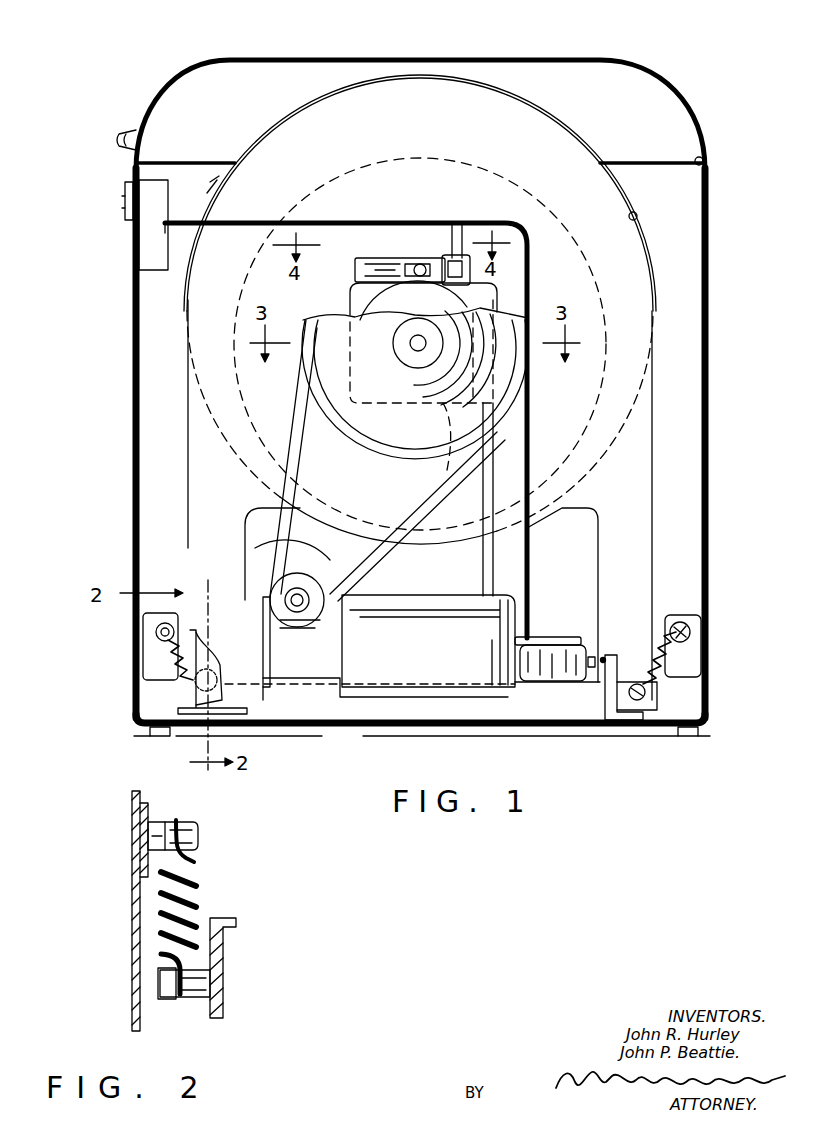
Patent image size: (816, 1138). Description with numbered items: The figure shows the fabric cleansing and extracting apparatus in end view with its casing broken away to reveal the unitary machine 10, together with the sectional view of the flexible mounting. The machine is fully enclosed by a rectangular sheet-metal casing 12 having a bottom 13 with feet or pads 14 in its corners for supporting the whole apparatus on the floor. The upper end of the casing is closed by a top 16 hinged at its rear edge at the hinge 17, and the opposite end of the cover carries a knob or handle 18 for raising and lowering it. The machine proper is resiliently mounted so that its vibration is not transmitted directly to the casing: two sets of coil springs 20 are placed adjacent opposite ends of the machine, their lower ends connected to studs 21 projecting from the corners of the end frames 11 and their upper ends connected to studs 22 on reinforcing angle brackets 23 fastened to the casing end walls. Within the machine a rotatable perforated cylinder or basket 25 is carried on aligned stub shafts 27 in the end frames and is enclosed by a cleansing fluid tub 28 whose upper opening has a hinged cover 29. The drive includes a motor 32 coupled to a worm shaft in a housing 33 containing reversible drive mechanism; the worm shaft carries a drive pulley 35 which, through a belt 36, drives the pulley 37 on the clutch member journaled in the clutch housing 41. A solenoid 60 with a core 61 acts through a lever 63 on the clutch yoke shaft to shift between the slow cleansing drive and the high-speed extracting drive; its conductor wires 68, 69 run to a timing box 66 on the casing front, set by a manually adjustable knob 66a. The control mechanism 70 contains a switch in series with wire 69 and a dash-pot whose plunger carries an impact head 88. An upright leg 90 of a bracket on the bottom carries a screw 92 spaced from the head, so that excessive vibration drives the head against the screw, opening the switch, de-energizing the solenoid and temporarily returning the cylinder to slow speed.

In FIG. 1, the unitary machine 10 is at (630, 380).
In FIG. 1, the end frames 11 is at (654, 558).
In FIG. 2, the end frames 11 is at (230, 936).
In FIG. 1, the casing 12 is at (708, 526).
In FIG. 2, the casing 12 is at (133, 926).
In FIG. 1, the bottom 13 is at (586, 737).
In FIG. 1, the feet or pads 14 is at (158, 737).
In FIG. 1, the top 16 is at (507, 58).
In FIG. 1, the hinge 17 is at (705, 159).
In FIG. 1, the knob or handle 18 is at (122, 140).
In FIG. 1, the coil springs 20 is at (680, 672).
In FIG. 2, the coil springs 20 is at (197, 886).
In FIG. 1, the studs 21 is at (639, 702).
In FIG. 2, the studs 21 is at (200, 992).
In FIG. 1, the studs 22 is at (685, 622).
In FIG. 2, the studs 22 is at (160, 830).
In FIG. 1, the reinforcing angle brackets 23 is at (690, 656).
In FIG. 2, the reinforcing angle brackets 23 is at (147, 808).
In FIG. 1, the perforated cylinder or basket 25 is at (582, 434).
In FIG. 1, the stub shafts 27 is at (414, 348).
In FIG. 1, the cleansing fluid container or tub 28 is at (606, 448).
In FIG. 1, the hinged cover 29 is at (292, 122).
In FIG. 1, the motor 32 is at (263, 564).
In FIG. 1, the housing 33 is at (392, 674).
In FIG. 1, the drive pulley 35 is at (286, 606).
In FIG. 1, the belt 36 is at (300, 452).
In FIG. 1, the pulley 37 is at (384, 452).
In FIG. 1, the housing 41 is at (350, 301).
In FIG. 1, the solenoid 60 is at (466, 255).
In FIG. 1, the core 61 is at (432, 262).
In FIG. 1, the lever 63 is at (392, 259).
In FIG. 1, the box 66 is at (148, 252).
In FIG. 1, the manually adjustable knob 66a is at (125, 216).
In FIG. 1, the conductor wire 68 is at (455, 246).
In FIG. 1, the conductor wire 69 is at (330, 222).
In FIG. 1, the control mechanism 70 is at (572, 672).
In FIG. 1, the impact head 88 is at (592, 656).
In FIG. 1, the upright leg 90 is at (613, 666).
In FIG. 1, the screw 92 is at (604, 657).